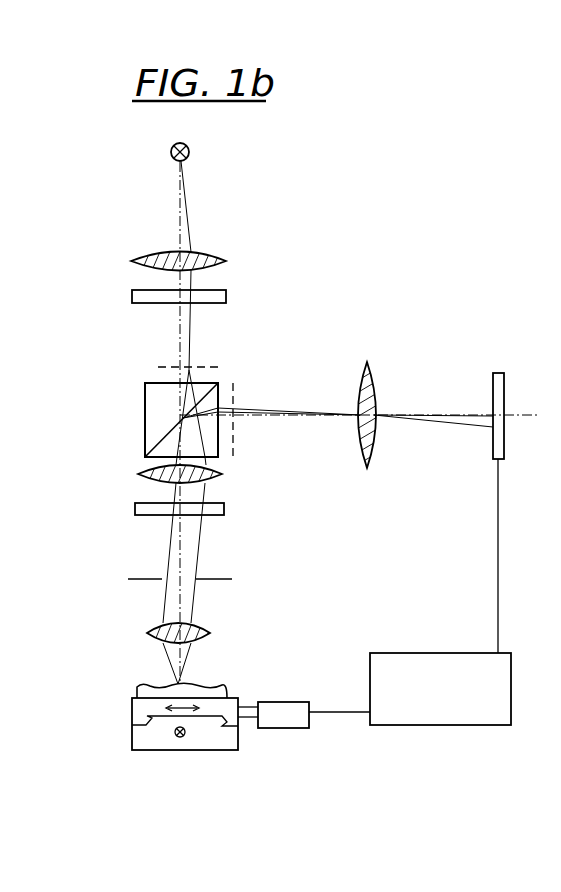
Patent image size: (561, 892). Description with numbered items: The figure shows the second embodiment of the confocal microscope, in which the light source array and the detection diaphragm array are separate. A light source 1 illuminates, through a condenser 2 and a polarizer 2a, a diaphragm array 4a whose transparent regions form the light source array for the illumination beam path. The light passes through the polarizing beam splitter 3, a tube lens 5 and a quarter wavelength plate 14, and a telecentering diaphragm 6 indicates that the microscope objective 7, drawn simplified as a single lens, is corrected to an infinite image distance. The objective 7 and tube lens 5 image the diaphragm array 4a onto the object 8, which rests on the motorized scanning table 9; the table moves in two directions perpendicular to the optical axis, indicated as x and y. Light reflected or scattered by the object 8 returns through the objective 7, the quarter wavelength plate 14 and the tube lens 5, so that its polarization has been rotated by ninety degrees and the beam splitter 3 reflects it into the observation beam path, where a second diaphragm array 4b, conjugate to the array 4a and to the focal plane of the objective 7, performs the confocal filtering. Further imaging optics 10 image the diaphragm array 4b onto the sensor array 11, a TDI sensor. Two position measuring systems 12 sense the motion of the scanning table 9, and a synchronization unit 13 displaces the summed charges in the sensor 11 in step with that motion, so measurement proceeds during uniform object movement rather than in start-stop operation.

The light source 1 is at (189, 152).
The condenser 2 is at (222, 261).
The polarizer 2a is at (212, 296).
The beam splitter 3 is at (148, 420).
The diaphragm array 4a is at (146, 367).
The diaphragm array 4b is at (234, 386).
The tube lens 5 is at (222, 474).
The quarter wavelength plate 14 is at (214, 508).
The telecentering diaphragm 6 is at (232, 579).
The microscope objective 7 is at (210, 633).
The object 8 is at (223, 693).
The scanning table 9 is at (228, 745).
The x direction x is at (188, 708).
The y direction y is at (182, 737).
The imaging optics 10 is at (373, 381).
The sensor array 11 is at (503, 390).
The position measuring systems 12 is at (294, 718).
The synchronization unit 13 is at (410, 712).